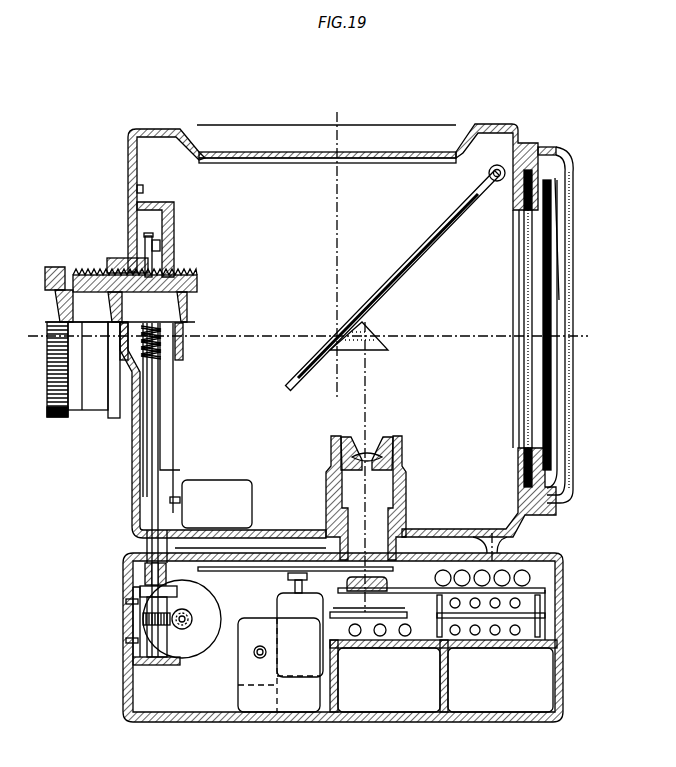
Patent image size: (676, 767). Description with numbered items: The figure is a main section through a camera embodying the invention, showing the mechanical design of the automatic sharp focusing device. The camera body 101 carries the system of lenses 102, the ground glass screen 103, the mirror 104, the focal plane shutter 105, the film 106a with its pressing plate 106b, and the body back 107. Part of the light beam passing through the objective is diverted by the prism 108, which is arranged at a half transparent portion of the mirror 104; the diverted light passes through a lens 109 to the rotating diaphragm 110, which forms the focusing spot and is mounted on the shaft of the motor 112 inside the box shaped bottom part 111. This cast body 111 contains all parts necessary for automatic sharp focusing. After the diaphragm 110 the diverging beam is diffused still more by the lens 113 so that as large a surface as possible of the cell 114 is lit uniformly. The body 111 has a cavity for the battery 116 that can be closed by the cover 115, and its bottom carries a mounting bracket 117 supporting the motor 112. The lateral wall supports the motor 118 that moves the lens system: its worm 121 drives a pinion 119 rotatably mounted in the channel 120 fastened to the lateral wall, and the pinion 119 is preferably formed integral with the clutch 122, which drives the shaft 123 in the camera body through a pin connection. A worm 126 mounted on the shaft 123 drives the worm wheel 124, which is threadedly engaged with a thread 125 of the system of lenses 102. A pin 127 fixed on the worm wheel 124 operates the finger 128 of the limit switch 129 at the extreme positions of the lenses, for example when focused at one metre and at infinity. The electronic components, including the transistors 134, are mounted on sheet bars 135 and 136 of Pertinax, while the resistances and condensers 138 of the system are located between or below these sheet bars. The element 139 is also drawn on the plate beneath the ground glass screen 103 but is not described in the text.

The camera body 101 is at (128, 162).
The system of lenses 102 is at (58, 263).
The ground glass screen 103 is at (428, 152).
The mirror 104 is at (426, 243).
The focal plane shutter 105 is at (522, 270).
The film 106a is at (541, 373).
The pressing plate 106b is at (565, 393).
The body back 107 is at (570, 245).
The prism 108 is at (385, 350).
The lens 109 is at (404, 455).
The rotating diaphragm 110 is at (263, 548).
The box shaped bottom part 111 is at (124, 581).
The motor 112 is at (279, 608).
The lens 113 is at (388, 587).
The cell 114 is at (376, 612).
The cover 115 is at (374, 716).
The battery 116 is at (451, 716).
The mounting bracket 117 is at (256, 716).
The motor 118 is at (196, 655).
The pinion 119 is at (143, 626).
The channel 120 is at (133, 663).
The worm 121 is at (195, 630).
The clutch 122 is at (147, 555).
The shaft 123 is at (152, 512).
The worm wheel 124 is at (144, 246).
The thread 125 is at (195, 281).
The worm 126 is at (165, 333).
The pin 127 is at (175, 243).
The finger 128 is at (180, 481).
The limit switch 129 is at (240, 483).
The transistors 134 is at (521, 570).
The sheet bar 135 is at (548, 591).
The sheet bar 136 is at (548, 615).
The resistances and condensers 138 is at (494, 636).
The filter 139 is at (346, 152).